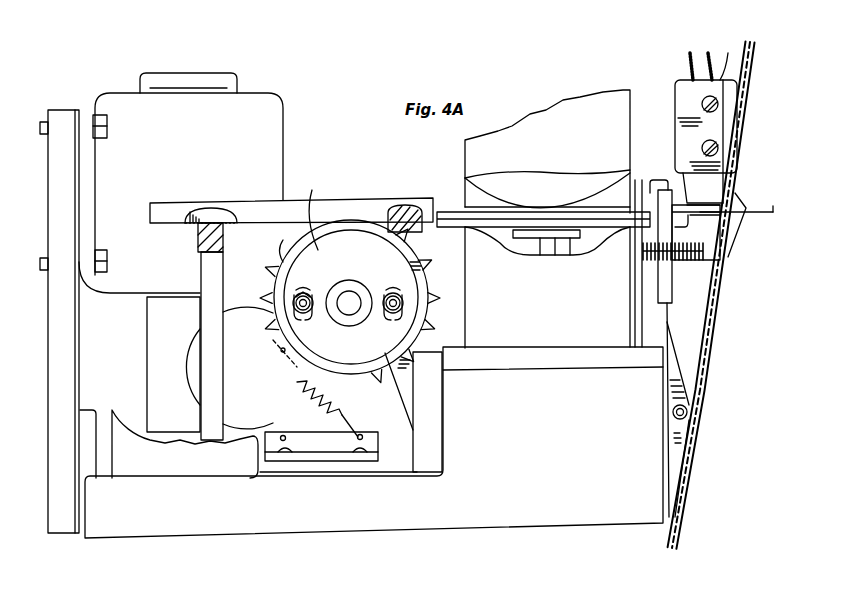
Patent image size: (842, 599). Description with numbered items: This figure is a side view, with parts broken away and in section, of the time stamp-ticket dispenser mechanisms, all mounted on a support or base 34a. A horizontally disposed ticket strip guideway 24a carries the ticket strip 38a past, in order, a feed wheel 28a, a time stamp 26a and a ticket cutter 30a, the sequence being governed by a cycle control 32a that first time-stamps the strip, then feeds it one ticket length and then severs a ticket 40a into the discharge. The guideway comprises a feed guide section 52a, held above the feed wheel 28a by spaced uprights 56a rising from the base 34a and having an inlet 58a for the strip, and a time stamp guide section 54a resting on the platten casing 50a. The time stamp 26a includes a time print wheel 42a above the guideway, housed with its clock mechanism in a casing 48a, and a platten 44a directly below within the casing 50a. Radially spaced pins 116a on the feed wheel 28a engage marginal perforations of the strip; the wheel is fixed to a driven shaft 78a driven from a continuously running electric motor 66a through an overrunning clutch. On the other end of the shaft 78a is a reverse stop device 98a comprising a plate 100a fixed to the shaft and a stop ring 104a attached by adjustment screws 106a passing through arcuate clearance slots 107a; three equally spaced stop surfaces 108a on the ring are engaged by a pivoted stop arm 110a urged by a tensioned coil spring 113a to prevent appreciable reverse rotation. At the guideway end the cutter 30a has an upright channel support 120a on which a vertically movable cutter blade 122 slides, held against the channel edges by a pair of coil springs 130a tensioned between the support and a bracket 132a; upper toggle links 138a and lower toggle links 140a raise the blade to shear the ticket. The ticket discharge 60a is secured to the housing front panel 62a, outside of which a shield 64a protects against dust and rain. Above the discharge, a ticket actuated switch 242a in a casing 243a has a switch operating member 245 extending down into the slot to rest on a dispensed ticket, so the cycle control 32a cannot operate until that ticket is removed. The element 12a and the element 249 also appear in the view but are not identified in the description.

The bracket 12a is at (659, 178).
The ticket strip guideway 24a is at (389, 192).
The time stamp 26a is at (630, 90).
The ticket feed wheel 28a is at (440, 301).
The ticket cutter 30a is at (547, 219).
The cycle control 32a is at (188, 484).
The base 34a is at (190, 539).
The ticket strip 38a is at (152, 226).
The severed ticket 40a is at (760, 214).
The time print wheel 42a is at (608, 192).
The platten 44a is at (580, 254).
The casing 48a is at (675, 118).
The platten casing 50a is at (598, 348).
The feed guide section 52a is at (175, 226).
The time stamp guide section 54a is at (455, 229).
The spaced uprights 56a is at (223, 375).
The inlet 58a is at (150, 213).
The ticket discharge 60a is at (696, 232).
The housing front panel 62a is at (722, 291).
The shield 64a is at (737, 193).
The electric driving motor 66a is at (282, 97).
The driven shaft 78a is at (349, 315).
The stop device 98a is at (343, 377).
The plate 100a is at (438, 320).
The stop ring 104a is at (317, 211).
The adjustment screws 106a is at (304, 320).
The arcuate clearance slots 107a is at (303, 293).
The stop surfaces 108a is at (303, 289).
The pivoted stop arm 110a is at (296, 423).
The tensioned coil spring 113a is at (343, 409).
The feed pins 116a is at (290, 232).
The channel support 120a is at (655, 312).
The cutter blade 122 is at (673, 281).
The coil springs 130a is at (640, 248).
The bracket 132a is at (708, 264).
The upper toggle links 138a is at (684, 392).
The lower toggle links 140a is at (680, 440).
The ticket actuated switch 242a is at (681, 70).
The switch casing 243a is at (736, 40).
The switch operating member 245 is at (679, 165).
The spring 249 is at (671, 243).